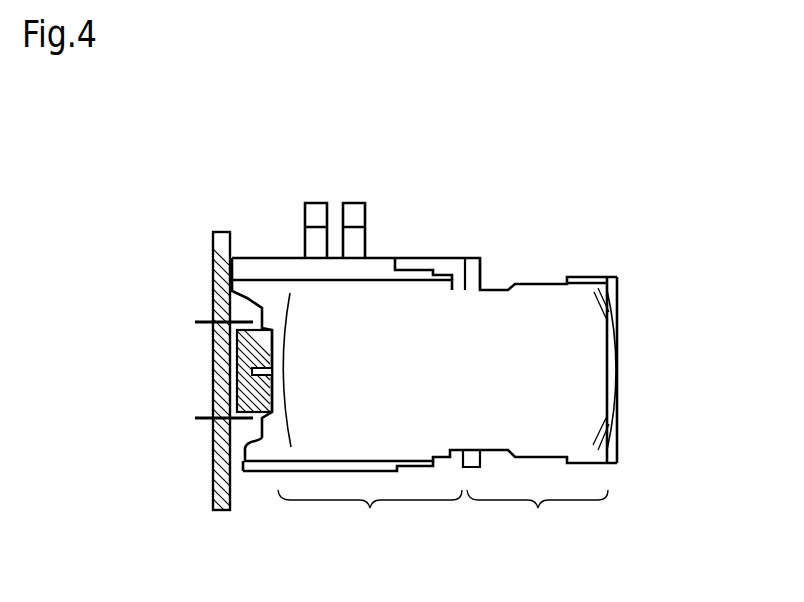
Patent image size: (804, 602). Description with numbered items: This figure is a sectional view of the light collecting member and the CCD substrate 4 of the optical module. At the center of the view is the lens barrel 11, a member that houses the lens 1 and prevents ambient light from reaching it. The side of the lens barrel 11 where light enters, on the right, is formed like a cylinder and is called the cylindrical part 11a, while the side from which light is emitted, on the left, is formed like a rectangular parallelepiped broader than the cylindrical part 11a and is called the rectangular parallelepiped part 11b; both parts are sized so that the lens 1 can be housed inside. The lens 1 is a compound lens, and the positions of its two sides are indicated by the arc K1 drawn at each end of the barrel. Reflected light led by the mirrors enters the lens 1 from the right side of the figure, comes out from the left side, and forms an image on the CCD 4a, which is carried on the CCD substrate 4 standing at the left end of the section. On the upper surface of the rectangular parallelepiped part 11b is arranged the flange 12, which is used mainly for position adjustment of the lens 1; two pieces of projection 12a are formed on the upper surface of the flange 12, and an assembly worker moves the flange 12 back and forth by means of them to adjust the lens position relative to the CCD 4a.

The lens 1 is at (617, 317).
The CCD substrate 4 is at (213, 253).
The CCD 4a is at (243, 395).
The lens barrel 11 is at (543, 283).
The cylindrical part 11a is at (537, 518).
The rectangular parallelepiped part 11b is at (370, 518).
The flange 12 is at (262, 257).
The projection 12a is at (317, 203).
The arc K1 is at (284, 363).